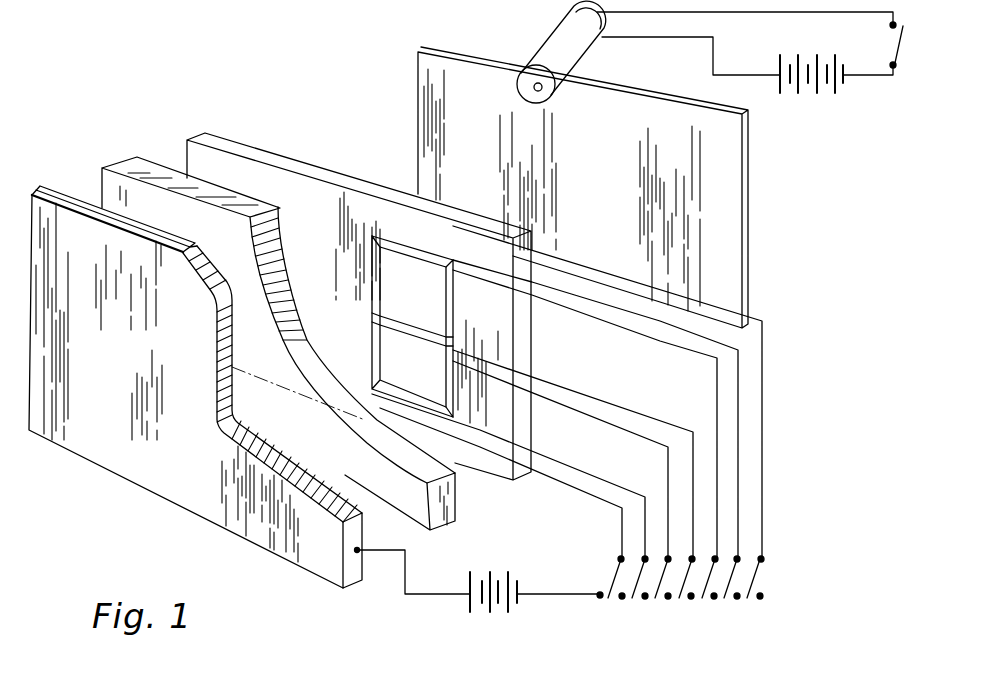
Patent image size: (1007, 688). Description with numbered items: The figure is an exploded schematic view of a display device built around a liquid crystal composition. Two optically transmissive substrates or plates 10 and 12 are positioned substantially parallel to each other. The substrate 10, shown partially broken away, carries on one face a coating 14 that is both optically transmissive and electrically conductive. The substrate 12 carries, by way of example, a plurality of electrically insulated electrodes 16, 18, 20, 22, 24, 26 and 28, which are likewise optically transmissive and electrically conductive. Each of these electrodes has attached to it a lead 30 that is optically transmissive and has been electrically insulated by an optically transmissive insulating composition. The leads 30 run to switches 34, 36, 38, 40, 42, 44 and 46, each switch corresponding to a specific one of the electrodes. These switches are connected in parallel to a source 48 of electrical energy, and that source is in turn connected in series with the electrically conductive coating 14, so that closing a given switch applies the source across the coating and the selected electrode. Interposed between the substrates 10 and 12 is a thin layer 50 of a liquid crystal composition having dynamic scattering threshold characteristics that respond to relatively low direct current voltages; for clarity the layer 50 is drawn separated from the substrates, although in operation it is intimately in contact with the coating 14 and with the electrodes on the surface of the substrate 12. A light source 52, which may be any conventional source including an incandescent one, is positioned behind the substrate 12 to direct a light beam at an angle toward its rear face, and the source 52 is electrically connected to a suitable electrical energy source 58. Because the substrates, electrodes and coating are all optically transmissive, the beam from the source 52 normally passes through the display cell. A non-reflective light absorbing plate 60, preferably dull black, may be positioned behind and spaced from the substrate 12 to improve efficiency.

The substrate 10 is at (110, 357).
The substrate 12 is at (353, 226).
The coating 14 is at (73, 197).
The electrode 16 is at (378, 274).
The electrode 18 is at (390, 243).
The electrode 20 is at (452, 300).
The electrode 22 is at (424, 330).
The electrode 24 is at (443, 383).
The electrode 26 is at (410, 398).
The electrode 28 is at (315, 365).
The lead 30 is at (563, 307).
The switch 34 is at (752, 584).
The switch 36 is at (733, 575).
The switch 38 is at (709, 583).
The switch 40 is at (687, 582).
The switch 42 is at (663, 598).
The switch 44 is at (640, 598).
The switch 46 is at (612, 580).
The source of electrical energy 48 is at (478, 612).
The thin layer of liquid crystal composition 50 is at (168, 172).
The light source 52 is at (556, 43).
The electrical energy source 58 is at (812, 88).
The non-reflective light absorbing plate 60 is at (732, 157).